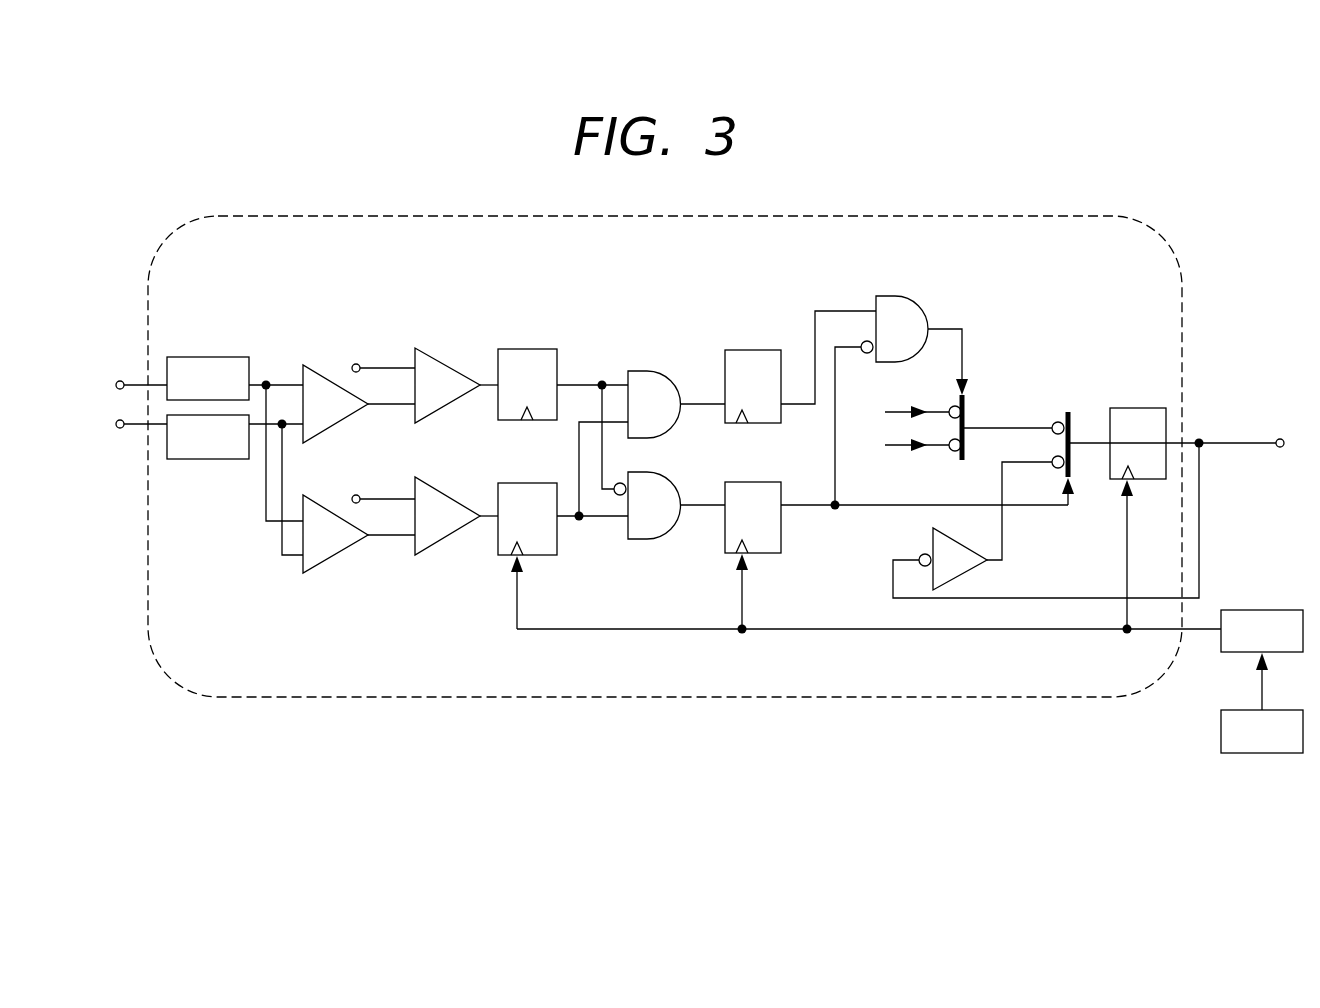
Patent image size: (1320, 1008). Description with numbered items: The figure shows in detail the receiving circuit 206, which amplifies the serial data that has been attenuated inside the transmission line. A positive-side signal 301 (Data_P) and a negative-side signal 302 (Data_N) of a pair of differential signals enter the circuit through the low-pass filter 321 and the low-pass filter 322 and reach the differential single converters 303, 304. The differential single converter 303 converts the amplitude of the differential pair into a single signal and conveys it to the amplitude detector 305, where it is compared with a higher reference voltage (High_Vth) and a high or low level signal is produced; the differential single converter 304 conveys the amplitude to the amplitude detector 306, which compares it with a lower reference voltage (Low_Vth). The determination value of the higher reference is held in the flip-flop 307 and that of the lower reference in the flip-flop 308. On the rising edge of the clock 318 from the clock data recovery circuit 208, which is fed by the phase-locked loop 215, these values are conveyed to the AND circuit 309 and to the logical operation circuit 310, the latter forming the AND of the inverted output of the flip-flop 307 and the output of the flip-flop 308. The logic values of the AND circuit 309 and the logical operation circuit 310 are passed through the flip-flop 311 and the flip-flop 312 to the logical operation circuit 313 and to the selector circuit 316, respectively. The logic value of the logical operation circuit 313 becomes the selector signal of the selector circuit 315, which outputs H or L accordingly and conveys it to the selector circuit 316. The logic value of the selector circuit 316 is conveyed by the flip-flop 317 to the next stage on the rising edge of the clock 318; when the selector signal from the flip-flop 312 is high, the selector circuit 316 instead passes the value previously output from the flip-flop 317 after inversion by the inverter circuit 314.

The receiving circuit 206 is at (1096, 216).
The clock data recovery circuit 208 is at (1266, 610).
The phase-locked loop 215 is at (1262, 755).
The positive-side signal 301 is at (78, 368).
The negative-side signal 302 is at (85, 446).
The differential single converter 303 is at (299, 362).
The differential single converter 304 is at (328, 572).
The amplitude detector 305 is at (445, 348).
The amplitude detector 306 is at (433, 548).
The flip-flop 307 is at (530, 349).
The flip-flop 308 is at (499, 561).
The AND circuit 309 is at (648, 371).
The logical operation circuit 310 is at (640, 540).
The flip-flop 311 is at (753, 350).
The flip-flop 312 is at (783, 532).
The logical operation circuit 313 is at (909, 297).
The inverter circuit 314 is at (957, 578).
The selector circuit 315 is at (972, 399).
The selector circuit 316 is at (1070, 412).
The flip-flop 317 is at (1142, 408).
The clock 318 is at (1125, 546).
The low-pass filter 321 is at (203, 355).
The low-pass filter 322 is at (208, 461).